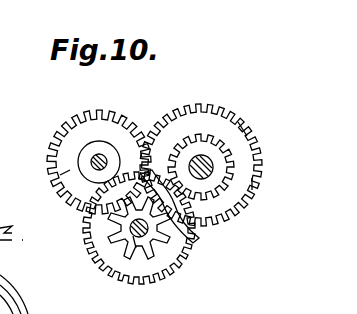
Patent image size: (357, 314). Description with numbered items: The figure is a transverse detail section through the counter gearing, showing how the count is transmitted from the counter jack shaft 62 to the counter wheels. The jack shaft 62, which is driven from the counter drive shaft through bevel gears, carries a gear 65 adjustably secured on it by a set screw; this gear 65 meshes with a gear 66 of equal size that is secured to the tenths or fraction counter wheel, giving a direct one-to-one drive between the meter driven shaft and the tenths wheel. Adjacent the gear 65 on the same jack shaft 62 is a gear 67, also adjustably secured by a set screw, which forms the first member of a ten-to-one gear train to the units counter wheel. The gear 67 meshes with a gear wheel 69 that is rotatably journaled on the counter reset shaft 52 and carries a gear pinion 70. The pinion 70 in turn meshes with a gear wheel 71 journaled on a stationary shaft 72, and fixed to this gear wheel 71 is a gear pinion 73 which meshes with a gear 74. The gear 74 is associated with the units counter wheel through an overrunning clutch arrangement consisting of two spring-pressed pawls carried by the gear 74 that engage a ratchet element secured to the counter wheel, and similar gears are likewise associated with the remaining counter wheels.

The counter reset shaft 52 is at (210, 169).
The counter jack shaft 62 is at (95, 161).
The gear 65 is at (78, 118).
The gear 66 is at (241, 128).
The gear 67 is at (63, 172).
The gear wheel 69 is at (206, 106).
The gear pinion 70 is at (228, 184).
The gear wheel 71 is at (169, 276).
The stationary shaft 72 is at (146, 245).
The gear pinion 73 is at (135, 248).
The gear 74 is at (190, 241).